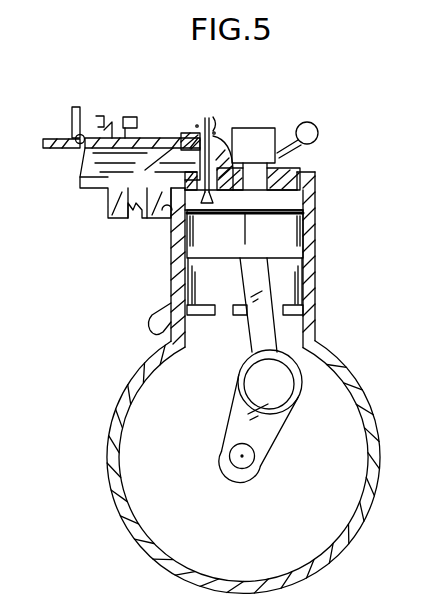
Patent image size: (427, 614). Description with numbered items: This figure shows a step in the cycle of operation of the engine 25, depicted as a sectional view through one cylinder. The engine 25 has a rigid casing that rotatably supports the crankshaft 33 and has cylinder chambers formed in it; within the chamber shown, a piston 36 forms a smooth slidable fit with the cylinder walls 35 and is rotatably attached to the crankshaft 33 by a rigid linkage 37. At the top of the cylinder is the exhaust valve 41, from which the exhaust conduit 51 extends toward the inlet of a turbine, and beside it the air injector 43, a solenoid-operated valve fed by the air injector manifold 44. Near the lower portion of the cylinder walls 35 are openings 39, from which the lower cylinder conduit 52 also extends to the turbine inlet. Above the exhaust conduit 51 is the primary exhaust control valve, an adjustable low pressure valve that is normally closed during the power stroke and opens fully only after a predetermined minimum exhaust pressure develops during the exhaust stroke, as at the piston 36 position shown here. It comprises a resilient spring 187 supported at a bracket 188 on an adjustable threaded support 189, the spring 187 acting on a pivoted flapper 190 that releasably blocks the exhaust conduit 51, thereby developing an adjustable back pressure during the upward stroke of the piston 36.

The engine 25 is at (124, 375).
The crankshaft 33 is at (256, 452).
The cylinder walls 35 is at (293, 204).
The piston 36 is at (287, 242).
The rigid linkage 37 is at (260, 333).
The openings 39 is at (297, 307).
The exhaust valve 41 is at (207, 157).
The air injector 43 is at (257, 131).
The air injector manifold 44 is at (313, 133).
The exhaust conduit 51 is at (177, 138).
The lower cylinder conduit 52 is at (163, 310).
The resilient spring 187 is at (100, 118).
The bracket 188 is at (107, 127).
The adjustable threaded support 189 is at (133, 118).
The pivoted flapper 190 is at (60, 127).